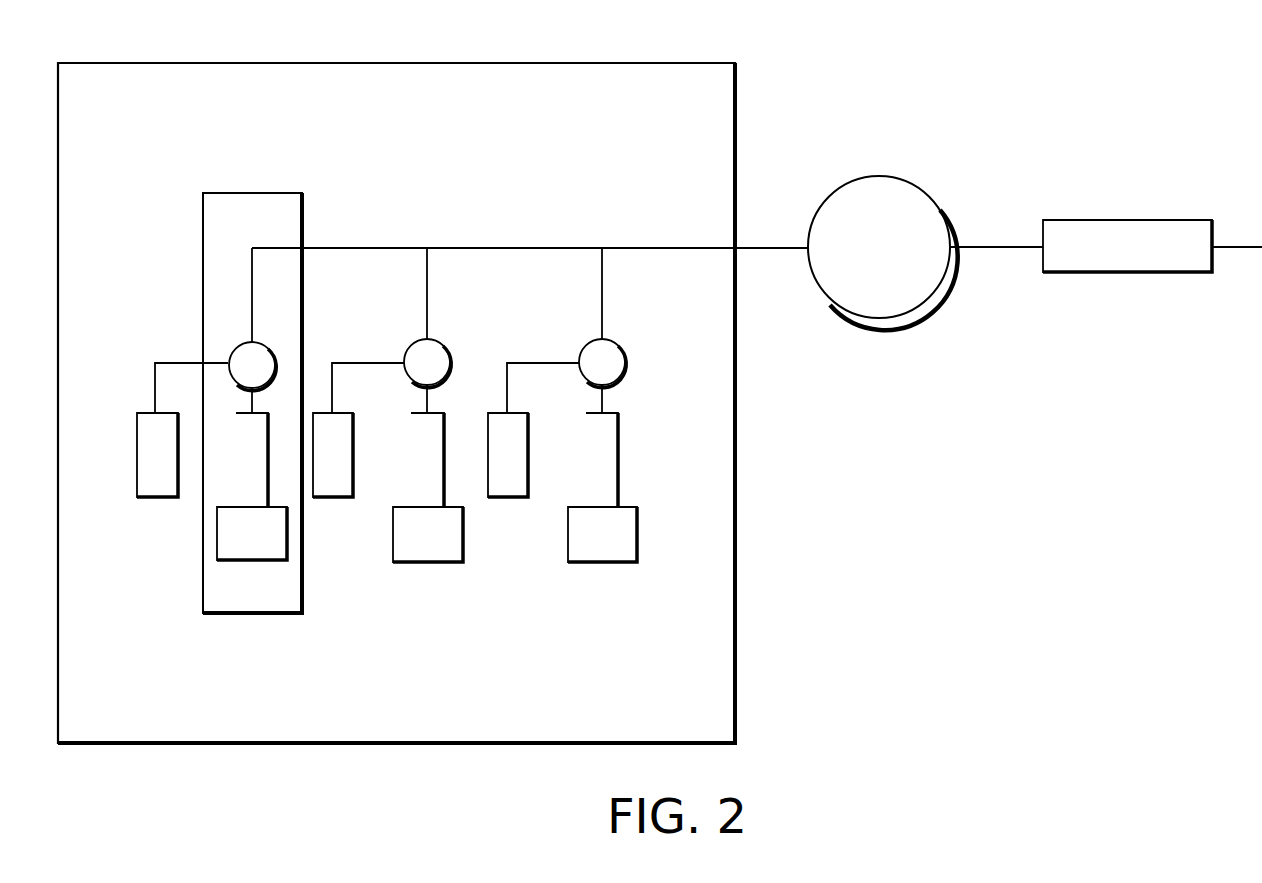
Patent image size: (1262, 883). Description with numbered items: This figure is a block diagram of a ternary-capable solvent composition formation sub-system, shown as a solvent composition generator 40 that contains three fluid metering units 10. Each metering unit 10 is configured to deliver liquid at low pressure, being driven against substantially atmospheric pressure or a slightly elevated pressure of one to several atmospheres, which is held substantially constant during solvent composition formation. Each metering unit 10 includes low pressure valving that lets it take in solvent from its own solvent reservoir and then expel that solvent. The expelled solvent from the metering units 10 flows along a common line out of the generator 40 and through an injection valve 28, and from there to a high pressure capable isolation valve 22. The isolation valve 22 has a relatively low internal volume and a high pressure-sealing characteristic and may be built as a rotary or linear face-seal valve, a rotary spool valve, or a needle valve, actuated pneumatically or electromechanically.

The solvent composition generator 40 is at (419, 63).
The metering unit 10 is at (252, 193).
The injection valve 28 is at (918, 186).
The isolation valve 22 is at (1127, 220).